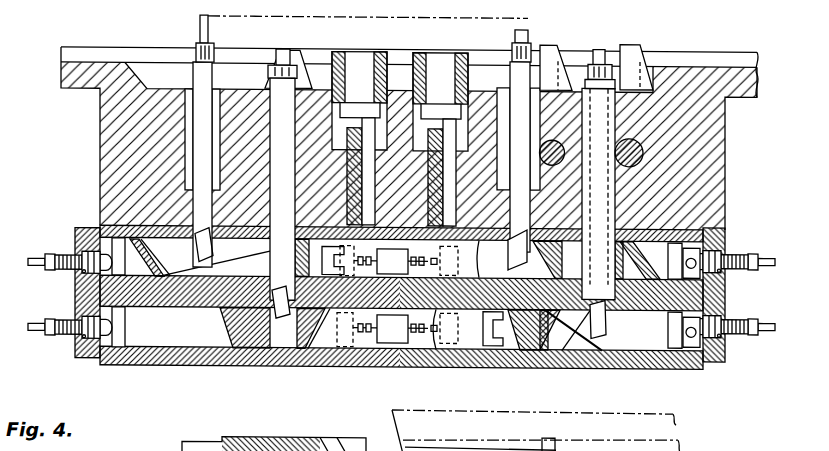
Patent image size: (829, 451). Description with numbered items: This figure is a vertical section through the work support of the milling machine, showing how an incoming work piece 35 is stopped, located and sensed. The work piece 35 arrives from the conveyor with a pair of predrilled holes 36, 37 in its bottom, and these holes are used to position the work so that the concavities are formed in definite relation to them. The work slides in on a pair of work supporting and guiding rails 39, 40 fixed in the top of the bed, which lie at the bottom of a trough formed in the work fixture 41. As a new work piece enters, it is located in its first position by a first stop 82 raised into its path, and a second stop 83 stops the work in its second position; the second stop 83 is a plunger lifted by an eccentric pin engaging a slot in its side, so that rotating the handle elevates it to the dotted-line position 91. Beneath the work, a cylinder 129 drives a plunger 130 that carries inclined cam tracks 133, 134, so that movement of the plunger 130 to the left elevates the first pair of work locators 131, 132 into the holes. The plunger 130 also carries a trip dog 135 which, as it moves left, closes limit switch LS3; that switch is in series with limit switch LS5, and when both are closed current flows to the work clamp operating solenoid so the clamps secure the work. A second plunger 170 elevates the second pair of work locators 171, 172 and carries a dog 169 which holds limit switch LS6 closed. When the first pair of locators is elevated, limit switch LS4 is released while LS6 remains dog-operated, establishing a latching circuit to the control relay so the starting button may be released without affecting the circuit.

The predrilled hole 36 is at (199, 26).
The work locator 131 is at (214, 44).
The work locator 171 is at (284, 48).
The work locator 132 is at (516, 43).
The work piece 35 is at (531, 22).
The predrilled hole 37 is at (548, 32).
The first stop 82 is at (598, 47).
The work locator 172 is at (636, 42).
The second stop 83 is at (637, 41).
The plunger 130 is at (697, 205).
The cylinder 129 is at (99, 229).
The inclined cam track 133 is at (187, 271).
The trip dog 135 is at (400, 258).
The plunger 170 is at (194, 335).
The limit switch LS3 is at (343, 322).
The limit switch LS6 is at (355, 332).
The dog 169 is at (390, 338).
The limit switch LS4 is at (438, 343).
The limit switch LS5 is at (477, 348).
The inclined cam track 134 is at (545, 302).
The work fixture 41 is at (247, 441).
The work supporting and guiding rail 40 is at (409, 448).
The elevated stop position 91 is at (550, 433).
The work supporting and guiding rail 39 is at (716, 445).